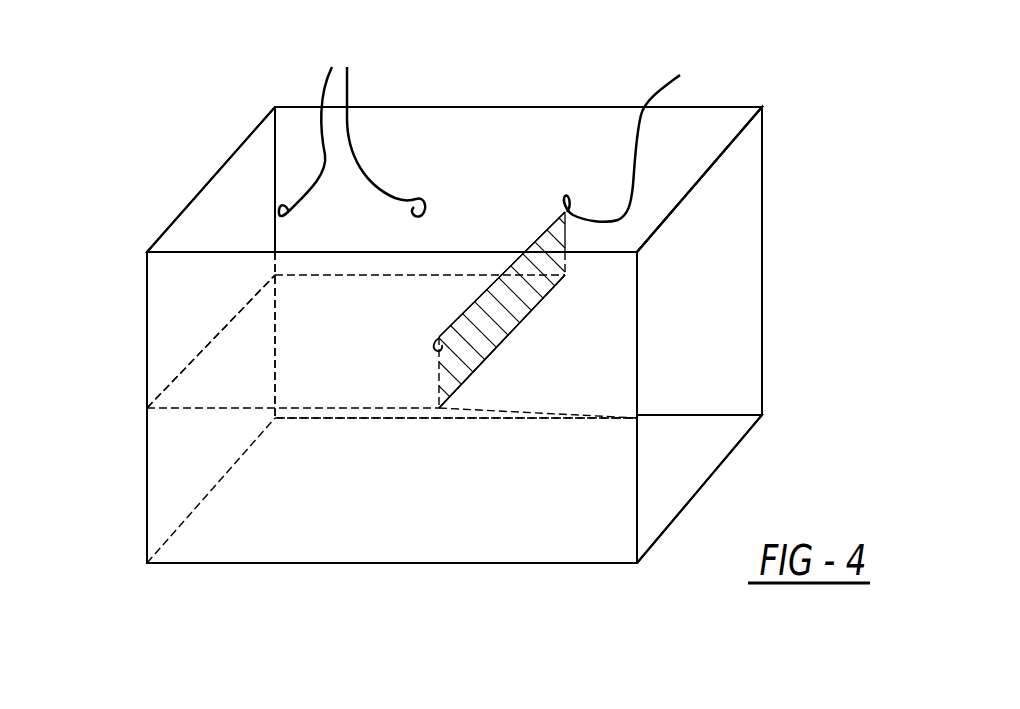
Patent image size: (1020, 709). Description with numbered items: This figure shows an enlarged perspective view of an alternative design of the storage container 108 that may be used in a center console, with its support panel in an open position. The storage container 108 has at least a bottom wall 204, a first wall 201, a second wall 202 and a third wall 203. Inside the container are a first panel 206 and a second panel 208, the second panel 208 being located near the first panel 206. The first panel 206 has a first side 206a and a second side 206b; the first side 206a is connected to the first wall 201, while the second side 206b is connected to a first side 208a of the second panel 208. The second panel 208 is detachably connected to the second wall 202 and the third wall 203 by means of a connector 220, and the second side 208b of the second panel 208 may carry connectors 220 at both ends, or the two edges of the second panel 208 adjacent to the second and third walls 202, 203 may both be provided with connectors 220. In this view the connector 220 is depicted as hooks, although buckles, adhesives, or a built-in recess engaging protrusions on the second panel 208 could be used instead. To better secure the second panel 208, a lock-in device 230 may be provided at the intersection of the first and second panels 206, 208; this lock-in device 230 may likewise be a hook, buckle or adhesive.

The storage container 108 is at (200, 594).
The first wall 201 is at (237, 185).
The second wall 202 is at (162, 282).
The third wall 203 is at (688, 145).
The bottom wall 204 is at (660, 473).
The first panel 206 is at (385, 353).
The first side 206a is at (195, 358).
The second side 206b is at (470, 368).
The second panel 208 is at (512, 297).
The first side 208a is at (503, 342).
The second side 208b is at (533, 230).
The connector 220 is at (503, 128).
The lock-in device 230 is at (459, 435).